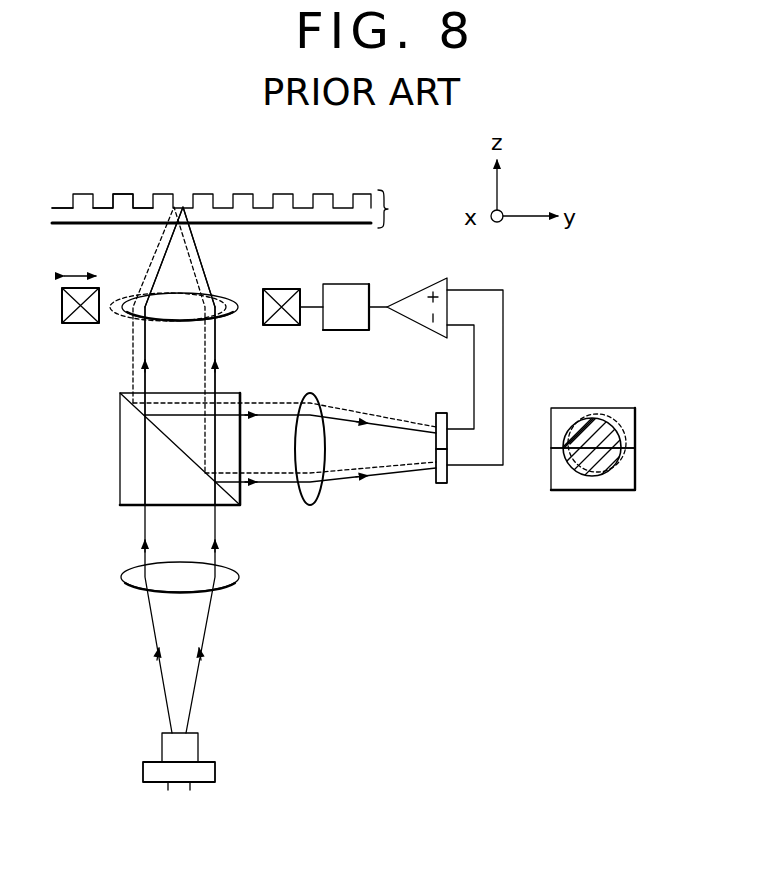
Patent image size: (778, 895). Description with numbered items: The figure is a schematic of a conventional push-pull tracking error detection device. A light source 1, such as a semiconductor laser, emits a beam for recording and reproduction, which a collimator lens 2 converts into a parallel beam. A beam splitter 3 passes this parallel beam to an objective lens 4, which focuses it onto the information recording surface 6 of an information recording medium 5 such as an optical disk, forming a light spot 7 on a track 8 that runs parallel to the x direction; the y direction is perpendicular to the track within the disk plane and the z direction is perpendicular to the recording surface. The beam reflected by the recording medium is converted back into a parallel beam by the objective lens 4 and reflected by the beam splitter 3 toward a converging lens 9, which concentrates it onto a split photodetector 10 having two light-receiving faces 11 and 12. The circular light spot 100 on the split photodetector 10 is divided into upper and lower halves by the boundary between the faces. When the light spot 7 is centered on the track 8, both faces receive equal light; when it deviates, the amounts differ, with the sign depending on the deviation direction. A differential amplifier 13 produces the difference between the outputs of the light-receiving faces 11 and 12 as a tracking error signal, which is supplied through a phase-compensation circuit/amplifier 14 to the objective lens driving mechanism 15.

The light source 1 is at (200, 744).
The collimator lens 2 is at (239, 577).
The beam splitter 3 is at (120, 477).
The objective lens 4 is at (224, 301).
The information recording medium 5 is at (412, 226).
The information recording surface 6 is at (62, 206).
The light spot 7 is at (179, 205).
The track 8 is at (145, 207).
The converging lens 9 is at (316, 505).
The split photodetector 10 is at (443, 486).
The light-receiving face 11 is at (448, 478).
The light-receiving face 12 is at (440, 412).
The differential amplifier 13 is at (416, 293).
The phase-compensation circuit/amplifier 14 is at (346, 284).
The objective lens driving mechanism 15 is at (281, 326).
The light spot on split photodetector 100 is at (576, 473).